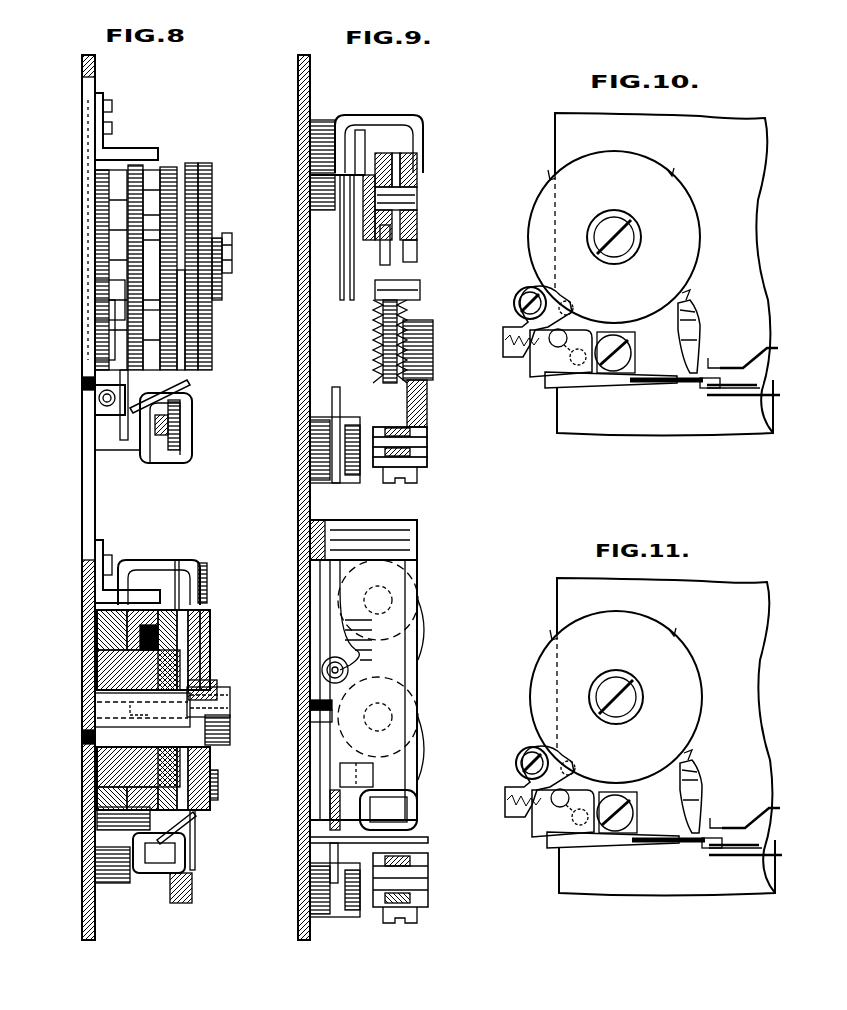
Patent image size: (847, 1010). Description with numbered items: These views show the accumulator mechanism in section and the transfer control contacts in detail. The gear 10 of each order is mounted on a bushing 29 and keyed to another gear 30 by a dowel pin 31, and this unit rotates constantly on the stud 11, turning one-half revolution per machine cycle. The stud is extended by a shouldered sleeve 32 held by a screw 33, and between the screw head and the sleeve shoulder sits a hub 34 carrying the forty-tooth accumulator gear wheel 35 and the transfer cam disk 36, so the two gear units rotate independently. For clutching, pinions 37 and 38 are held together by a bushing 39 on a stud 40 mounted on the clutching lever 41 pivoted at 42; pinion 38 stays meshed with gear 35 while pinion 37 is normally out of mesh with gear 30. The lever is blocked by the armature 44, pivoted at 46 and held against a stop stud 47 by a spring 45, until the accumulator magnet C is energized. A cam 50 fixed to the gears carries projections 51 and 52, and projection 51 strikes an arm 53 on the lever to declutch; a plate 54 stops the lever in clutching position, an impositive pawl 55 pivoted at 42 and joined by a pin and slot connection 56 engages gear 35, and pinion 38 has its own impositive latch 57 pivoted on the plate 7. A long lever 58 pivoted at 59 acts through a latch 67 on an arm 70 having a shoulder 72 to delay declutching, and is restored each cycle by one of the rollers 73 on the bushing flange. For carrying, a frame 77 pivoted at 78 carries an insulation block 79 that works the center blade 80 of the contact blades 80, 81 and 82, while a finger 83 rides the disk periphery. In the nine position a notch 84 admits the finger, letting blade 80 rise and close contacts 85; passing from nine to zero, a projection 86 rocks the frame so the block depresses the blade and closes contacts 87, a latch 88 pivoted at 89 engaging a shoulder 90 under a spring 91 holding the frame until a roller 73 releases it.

In FIG. 8, the plate 7 is at (82, 481).
In FIG. 9, the plate 7 is at (298, 492).
In FIG. 8, the gear 10 is at (150, 252).
In FIG. 8, the stud 11 is at (100, 712).
In FIG. 8, the bushing 29 is at (100, 300).
In FIG. 8, the gear 30 is at (170, 168).
In FIG. 8, the dowel pin 31 is at (100, 665).
In FIG. 8, the shouldered sleeve 32 is at (225, 693).
In FIG. 8, the screw 33 is at (232, 250).
In FIG. 10, the screw 33 is at (628, 262).
In FIG. 11, the screw 33 is at (631, 697).
In FIG. 8, the hub 34 is at (222, 240).
In FIG. 8, the accumulator gear wheel 35 is at (192, 165).
In FIG. 8, the transfer cam disk 36 is at (212, 178).
In FIG. 10, the transfer cam disk 36 is at (682, 207).
In FIG. 11, the transfer cam disk 36 is at (632, 697).
In FIG. 8, the pinion 37 is at (178, 562).
In FIG. 9, the pinion 37 is at (390, 265).
In FIG. 8, the pinion 38 is at (207, 575).
In FIG. 9, the pinion 38 is at (417, 258).
In FIG. 9, the bushing 39 is at (418, 175).
In FIG. 9, the stud 40 is at (418, 227).
In FIG. 9, the clutching lever 41 is at (420, 290).
In FIG. 9, the pivot 42 is at (397, 357).
In FIG. 9, the armature 44 is at (395, 660).
In FIG. 9, the spring 45 is at (328, 660).
In FIG. 9, the pivot 46 is at (417, 545).
In FIG. 9, the stop stud 47 is at (310, 715).
In FIG. 8, the cam 50 is at (100, 285).
In FIG. 8, the cam projection 51 is at (150, 215).
In FIG. 8, the projection 52 is at (128, 210).
In FIG. 9, the arm 53 is at (362, 170).
In FIG. 8, the plate 54 is at (132, 152).
In FIG. 9, the impositive latch or pawl 55 is at (433, 373).
In FIG. 9, the pin and slot connection 56 is at (427, 405).
In FIG. 8, the impositive latch 57 is at (192, 562).
In FIG. 9, the impositive latch 57 is at (405, 120).
In FIG. 9, the long lever 58 is at (335, 407).
In FIG. 9, the pivot 59 is at (320, 443).
In FIG. 9, the latch 67 is at (363, 200).
In FIG. 9, the arm 70 is at (345, 268).
In FIG. 9, the shoulder 72 is at (375, 775).
In FIG. 8, the rollers 73 is at (100, 176).
In FIG. 8, the frame 77 is at (150, 463).
In FIG. 10, the frame 77 is at (600, 378).
In FIG. 11, the frame 77 is at (609, 832).
In FIG. 8, the pivot 78 is at (182, 415).
In FIG. 10, the pivot 78 is at (618, 378).
In FIG. 11, the pivot 78 is at (623, 836).
In FIG. 10, the insulation block 79 is at (667, 388).
In FIG. 11, the insulation block 79 is at (667, 873).
In FIG. 9, the center blade 80 is at (427, 453).
In FIG. 10, the center blade 80 is at (730, 388).
In FIG. 11, the center blade 80 is at (734, 858).
In FIG. 9, the contact blade 81 is at (427, 433).
In FIG. 10, the contact blade 81 is at (765, 352).
In FIG. 11, the contact blade 81 is at (751, 800).
In FIG. 9, the contact blade 82 is at (385, 480).
In FIG. 10, the contact blade 82 is at (752, 398).
In FIG. 11, the contact blade 82 is at (745, 881).
In FIG. 8, the finger 83 is at (190, 380).
In FIG. 10, the finger 83 is at (699, 322).
In FIG. 11, the finger 83 is at (703, 793).
In FIG. 10, the notch 84 is at (694, 292).
In FIG. 11, the notch 84 is at (697, 685).
In FIG. 8, the contacts 85 is at (196, 865).
In FIG. 9, the contacts 85 is at (427, 443).
In FIG. 10, the contacts 85 is at (709, 364).
In FIG. 11, the contacts 85 is at (717, 808).
In FIG. 10, the projection 86 is at (695, 311).
In FIG. 11, the projection 86 is at (707, 703).
In FIG. 9, the contacts 87 is at (420, 465).
In FIG. 10, the contacts 87 is at (710, 390).
In FIG. 11, the contacts 87 is at (725, 855).
In FIG. 8, the latch 88 is at (95, 395).
In FIG. 10, the latch 88 is at (515, 322).
In FIG. 11, the latch 88 is at (518, 781).
In FIG. 8, the pivot 89 is at (82, 383).
In FIG. 10, the pivot 89 is at (517, 296).
In FIG. 11, the pivot 89 is at (514, 758).
In FIG. 10, the shoulder 90 is at (545, 372).
In FIG. 11, the shoulder 90 is at (559, 835).
In FIG. 8, the spring 91 is at (107, 398).
In FIG. 10, the spring 91 is at (513, 358).
In FIG. 11, the spring 91 is at (520, 831).
In FIG. 9, the accumulator magnet C is at (420, 605).